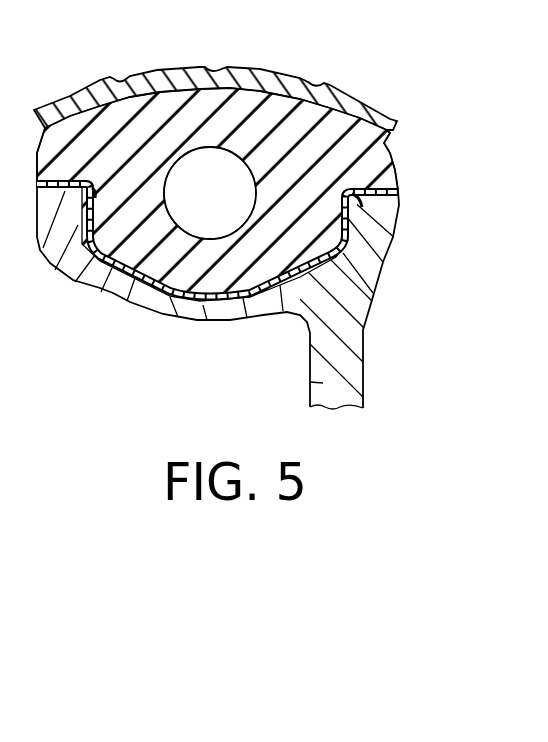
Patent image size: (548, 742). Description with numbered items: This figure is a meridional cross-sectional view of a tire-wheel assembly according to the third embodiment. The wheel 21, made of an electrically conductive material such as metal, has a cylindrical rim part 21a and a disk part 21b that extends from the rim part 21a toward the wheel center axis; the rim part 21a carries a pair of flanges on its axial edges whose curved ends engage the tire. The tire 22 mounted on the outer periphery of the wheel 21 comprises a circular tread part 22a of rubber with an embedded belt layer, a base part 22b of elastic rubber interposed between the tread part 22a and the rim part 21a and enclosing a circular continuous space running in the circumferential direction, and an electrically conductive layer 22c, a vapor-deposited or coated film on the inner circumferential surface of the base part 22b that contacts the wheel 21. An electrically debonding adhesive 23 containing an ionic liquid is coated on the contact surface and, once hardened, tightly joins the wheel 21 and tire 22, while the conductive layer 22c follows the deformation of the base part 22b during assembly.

The wheel 21 is at (273, 367).
The rim part 21a is at (159, 309).
The disk part 21b is at (309, 400).
The tire 22 is at (290, 74).
The tread part 22a is at (372, 99).
The base part 22b is at (390, 163).
The electrically conductive layer 22c is at (384, 190).
The electrically debonding adhesive 23 is at (394, 235).